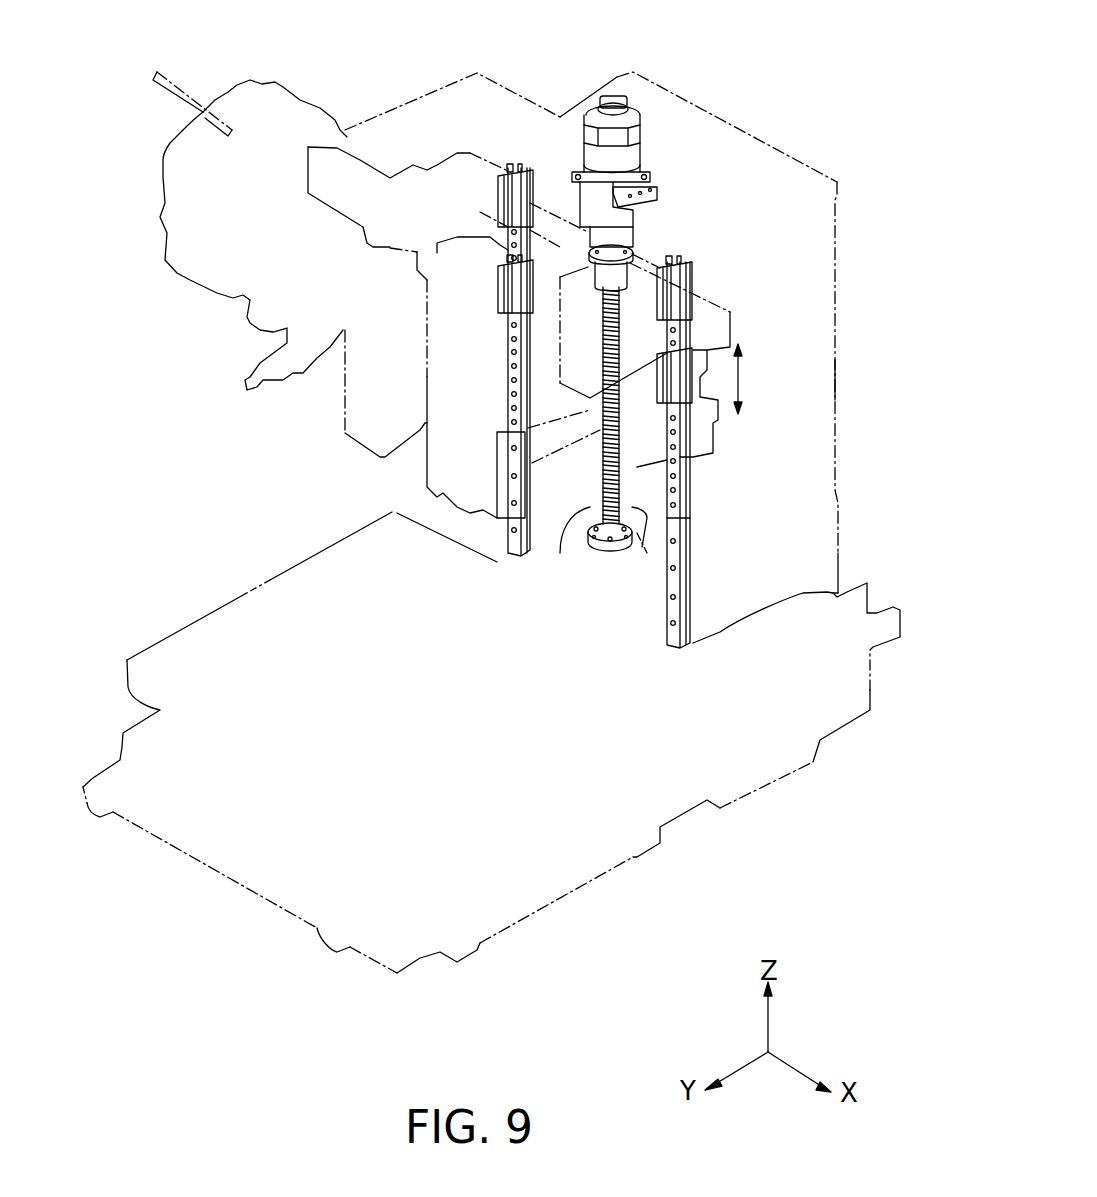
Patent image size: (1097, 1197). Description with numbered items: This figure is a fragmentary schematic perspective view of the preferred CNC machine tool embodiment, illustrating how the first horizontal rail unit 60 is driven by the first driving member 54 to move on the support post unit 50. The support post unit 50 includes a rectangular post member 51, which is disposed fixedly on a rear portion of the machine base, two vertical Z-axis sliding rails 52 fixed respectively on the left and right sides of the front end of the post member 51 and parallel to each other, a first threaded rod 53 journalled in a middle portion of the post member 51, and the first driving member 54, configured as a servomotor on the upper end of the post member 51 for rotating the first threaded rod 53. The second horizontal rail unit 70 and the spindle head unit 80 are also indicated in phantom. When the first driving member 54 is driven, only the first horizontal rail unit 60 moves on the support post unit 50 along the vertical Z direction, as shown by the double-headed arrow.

The support post unit 50 is at (848, 330).
The post member 51 is at (822, 381).
The vertical Z-axis sliding rails 52 is at (508, 373).
The first threaded rod 53 is at (596, 548).
The first driving member 54 is at (632, 150).
The first horizontal rail unit 60 is at (471, 150).
The second horizontal rail unit 70 is at (659, 475).
The spindle head unit 80 is at (419, 518).